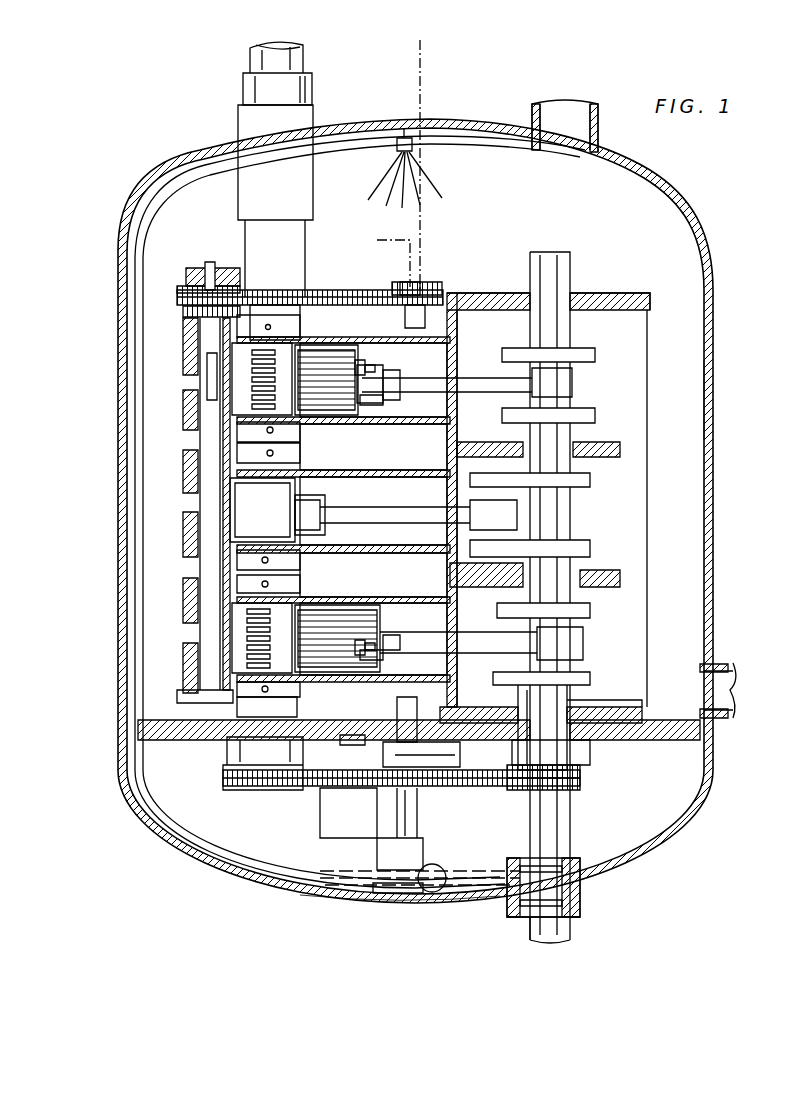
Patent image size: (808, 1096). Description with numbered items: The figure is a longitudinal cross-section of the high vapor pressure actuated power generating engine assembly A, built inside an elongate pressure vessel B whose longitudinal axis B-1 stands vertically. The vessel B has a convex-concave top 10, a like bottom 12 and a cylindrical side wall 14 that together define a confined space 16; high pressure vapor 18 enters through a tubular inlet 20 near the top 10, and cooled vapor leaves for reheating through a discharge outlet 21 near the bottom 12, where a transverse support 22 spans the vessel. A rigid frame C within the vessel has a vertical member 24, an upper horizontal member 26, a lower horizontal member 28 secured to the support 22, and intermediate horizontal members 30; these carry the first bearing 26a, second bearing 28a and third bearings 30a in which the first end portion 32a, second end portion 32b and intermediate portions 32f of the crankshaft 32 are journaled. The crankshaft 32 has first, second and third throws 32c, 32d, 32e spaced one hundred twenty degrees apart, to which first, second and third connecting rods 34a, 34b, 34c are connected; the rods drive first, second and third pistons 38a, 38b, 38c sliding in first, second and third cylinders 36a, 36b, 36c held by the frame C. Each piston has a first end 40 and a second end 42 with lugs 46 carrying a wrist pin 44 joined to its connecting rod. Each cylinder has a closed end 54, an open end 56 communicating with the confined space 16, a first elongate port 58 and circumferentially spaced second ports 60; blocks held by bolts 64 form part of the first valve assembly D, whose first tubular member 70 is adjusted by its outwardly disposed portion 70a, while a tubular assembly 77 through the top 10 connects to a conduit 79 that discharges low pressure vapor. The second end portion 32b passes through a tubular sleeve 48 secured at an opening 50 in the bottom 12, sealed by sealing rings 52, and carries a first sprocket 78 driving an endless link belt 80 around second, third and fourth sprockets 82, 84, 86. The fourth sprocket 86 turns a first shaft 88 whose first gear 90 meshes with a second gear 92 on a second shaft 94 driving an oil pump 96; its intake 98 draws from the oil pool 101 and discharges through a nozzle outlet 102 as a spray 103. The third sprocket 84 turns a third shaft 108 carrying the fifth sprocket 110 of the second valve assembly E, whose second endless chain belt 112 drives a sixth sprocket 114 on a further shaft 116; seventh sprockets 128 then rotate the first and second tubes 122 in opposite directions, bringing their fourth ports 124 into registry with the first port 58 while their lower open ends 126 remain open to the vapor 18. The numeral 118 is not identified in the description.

The convex-concave top 10 is at (630, 176).
The bottom 12 is at (428, 900).
The cylindrical side wall 14 is at (713, 398).
The confined space 16 is at (610, 230).
The high pressure vapor 18 is at (487, 235).
The tubular inlet 20 is at (600, 116).
The discharge outlet 21 is at (725, 662).
The transverse support 22 is at (628, 742).
The vertical member 24 is at (462, 322).
The upper horizontal member 26 is at (497, 292).
The first bearing 26a is at (585, 292).
The lower horizontal member 28 is at (640, 718).
The second bearing 28a is at (572, 706).
The intermediate horizontal members 30 is at (622, 450).
The third bearings 30a is at (590, 448).
The crankshaft 32 is at (585, 418).
The first end portion 32a is at (572, 330).
The second end portion 32b is at (570, 838).
The first throw 32c is at (572, 374).
The second throw 32d is at (515, 487).
The third throw 32e is at (578, 622).
The intermediate portions 32f is at (565, 460).
The first connecting rod 34a is at (462, 393).
The second connecting rod 34b is at (422, 507).
The third connecting rod 34c is at (470, 634).
The first cylinder 36a is at (374, 343).
The second cylinder 36b is at (395, 466).
The third cylinder 36c is at (348, 597).
The first piston 38a is at (310, 378).
The second piston 38b is at (250, 505).
The third piston 38c is at (360, 636).
The first end 40 is at (292, 388).
The second end 42 is at (370, 372).
The wrist pin 44 is at (392, 370).
The lugs 46 is at (386, 402).
The tubular sleeve 48 is at (582, 900).
The opening 50 is at (510, 915).
The sealing rings 52 is at (548, 868).
The first closed end 54 is at (200, 325).
The second open end 56 is at (222, 368).
The first elongate port 58 is at (285, 530).
The second ports 60 is at (288, 360).
The bolts 64 is at (303, 290).
The first tubular member 70 is at (313, 160).
The outwardly disposed portion 70a is at (313, 92).
The tubular assembly 77 is at (238, 125).
The first sprocket 78 is at (578, 772).
The conduit 79 is at (304, 66).
The endless link belt 80 is at (490, 790).
The second sprocket 82 is at (248, 790).
The third sprocket 84 is at (436, 788).
The fourth sprocket 86 is at (342, 788).
The first shaft 88 is at (352, 735).
The first gear 90 is at (297, 712).
The second gear 92 is at (460, 755).
The second shaft 94 is at (418, 816).
The oil pump 96 is at (423, 844).
The intake 98 is at (446, 886).
The pool of oil 101 is at (310, 888).
The nozzle outlet 102 is at (413, 152).
The spray 103 is at (436, 184).
The third shaft 108 is at (403, 280).
The fifth sprocket 110 is at (432, 290).
The second endless chain belt 112 is at (320, 292).
The sixth sprocket 114 is at (243, 292).
The third shaft 116 is at (212, 270).
The gear 118 is at (185, 280).
The first and second tubes 122 is at (185, 480).
The fourth ports 124 is at (208, 388).
The lower open ends 126 is at (205, 703).
The seventh sprocket 128 is at (185, 320).
The power generating engine assembly A is at (702, 202).
The pressure vessel B is at (715, 350).
The longitudinal axis B-1 is at (424, 62).
The rigid frame C is at (642, 295).
The first valve assembly D is at (302, 695).
The second valve assembly E is at (308, 800).